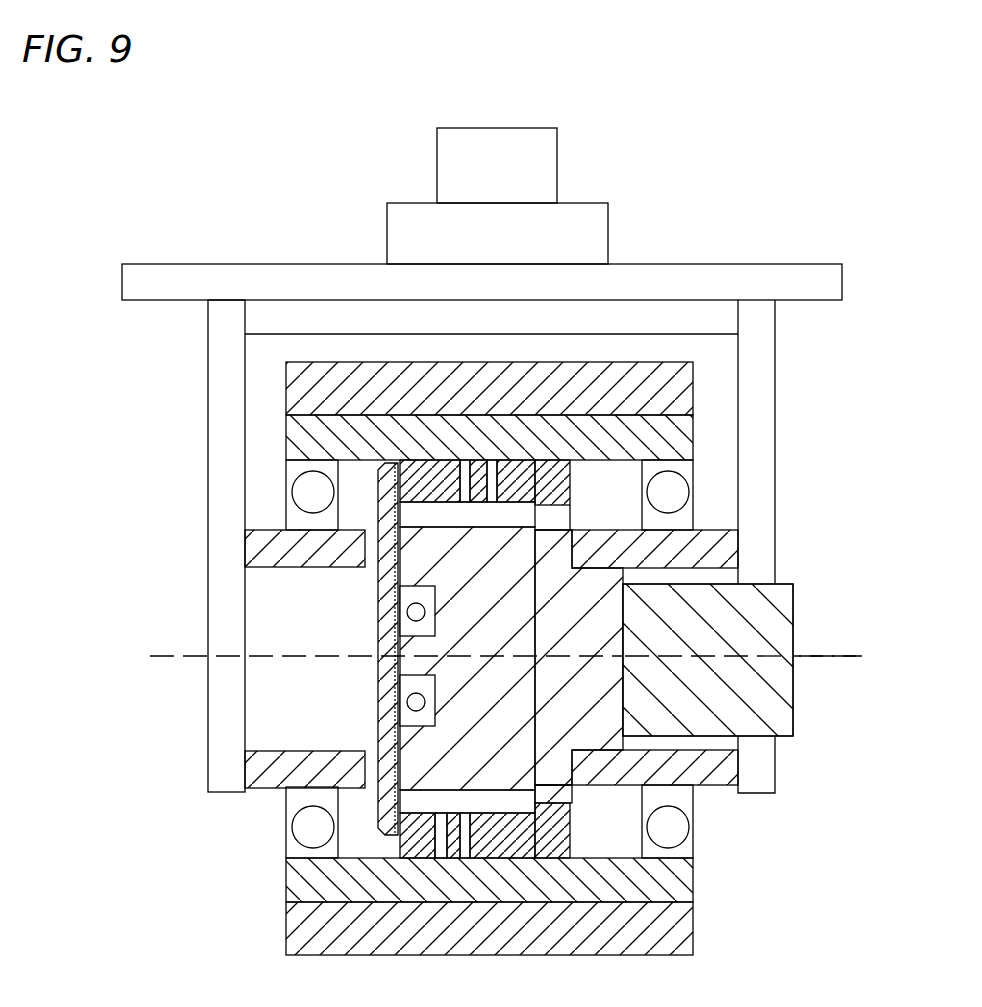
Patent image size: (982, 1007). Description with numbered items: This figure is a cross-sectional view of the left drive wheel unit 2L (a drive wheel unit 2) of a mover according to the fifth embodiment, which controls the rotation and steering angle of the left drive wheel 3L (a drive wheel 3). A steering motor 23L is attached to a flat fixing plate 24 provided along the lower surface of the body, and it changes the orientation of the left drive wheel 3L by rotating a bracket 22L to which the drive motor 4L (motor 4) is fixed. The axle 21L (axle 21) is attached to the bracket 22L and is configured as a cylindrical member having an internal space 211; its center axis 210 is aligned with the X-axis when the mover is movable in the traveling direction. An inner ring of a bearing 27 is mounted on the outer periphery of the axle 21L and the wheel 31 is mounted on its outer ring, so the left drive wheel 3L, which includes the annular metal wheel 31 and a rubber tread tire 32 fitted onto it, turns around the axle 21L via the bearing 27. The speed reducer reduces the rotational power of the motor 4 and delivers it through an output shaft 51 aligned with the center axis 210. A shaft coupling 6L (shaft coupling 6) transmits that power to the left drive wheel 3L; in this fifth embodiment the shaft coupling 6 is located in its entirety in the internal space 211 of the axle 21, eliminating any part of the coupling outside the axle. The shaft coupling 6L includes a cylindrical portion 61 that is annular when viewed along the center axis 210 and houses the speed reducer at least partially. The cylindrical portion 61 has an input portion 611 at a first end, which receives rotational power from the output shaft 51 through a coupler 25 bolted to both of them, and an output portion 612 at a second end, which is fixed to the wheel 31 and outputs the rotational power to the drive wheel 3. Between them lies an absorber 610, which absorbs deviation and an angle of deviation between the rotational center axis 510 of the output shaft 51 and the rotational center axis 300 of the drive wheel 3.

The left drive wheel unit 2L is at (488, 454).
The drive wheel unit 2 is at (488, 454).
The steering motor 23L is at (538, 157).
The fixing plate 24 is at (645, 272).
The bracket 22L is at (760, 373).
The axle 21L is at (723, 548).
The axle 21 is at (736, 548).
The internal space 211 is at (727, 745).
The center axis 210 is at (852, 652).
The drive motor 4L is at (756, 660).
The motor 4 is at (756, 660).
The rotational center axis of the drive wheel 300 is at (660, 657).
The rotational center axis of the output shaft 510 is at (612, 568).
The output shaft 51 is at (410, 650).
The coupler 25 is at (385, 691).
The bearing 27 is at (688, 847).
The wheel 31 is at (673, 882).
The tread tire 32 is at (590, 948).
The left drive wheel 3L is at (517, 932).
The drive wheel 3 is at (517, 932).
The cylindrical portion 61 is at (417, 848).
The shaft coupling 6L is at (462, 908).
The shaft coupling 6 is at (462, 908).
The input portion 611 is at (418, 466).
The absorber 610 is at (478, 468).
The output portion 612 is at (512, 470).